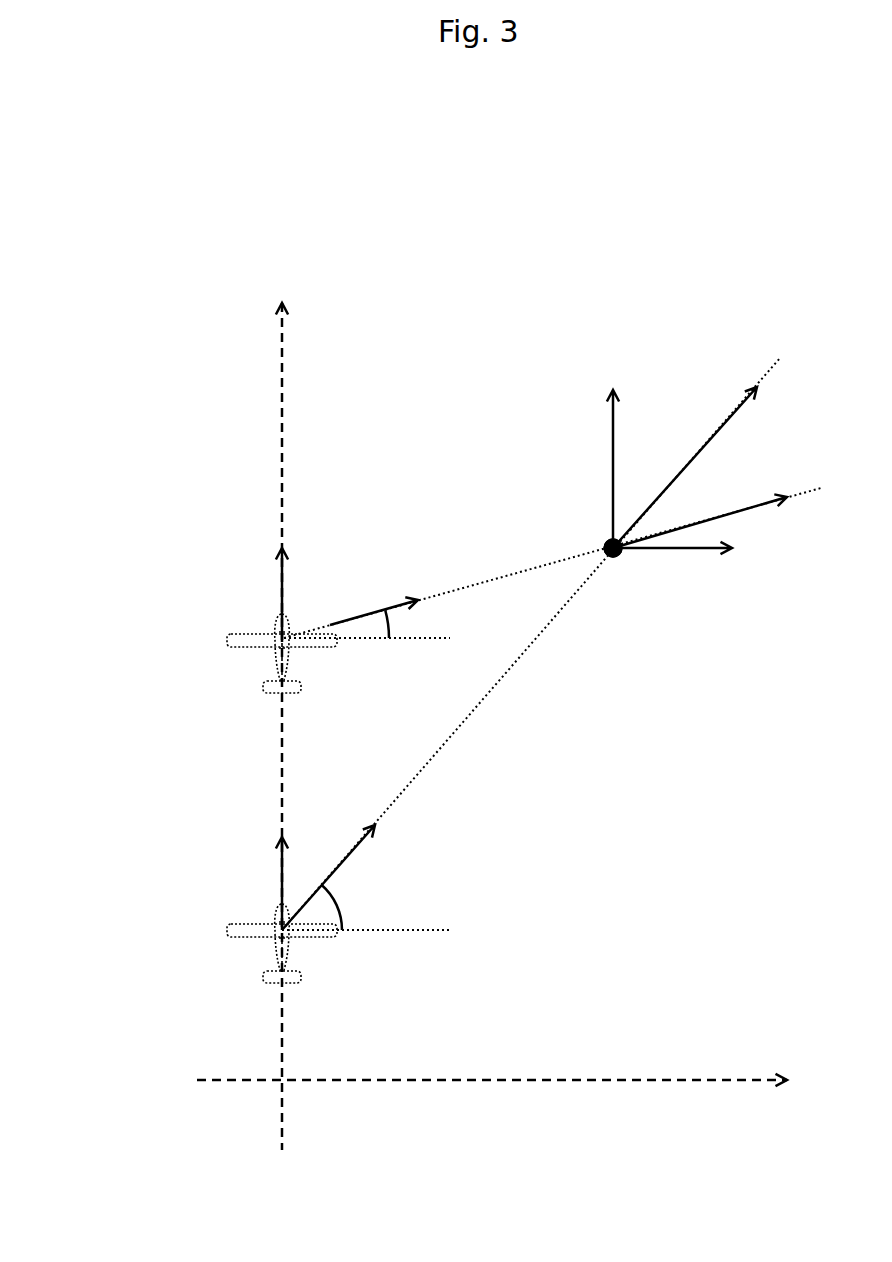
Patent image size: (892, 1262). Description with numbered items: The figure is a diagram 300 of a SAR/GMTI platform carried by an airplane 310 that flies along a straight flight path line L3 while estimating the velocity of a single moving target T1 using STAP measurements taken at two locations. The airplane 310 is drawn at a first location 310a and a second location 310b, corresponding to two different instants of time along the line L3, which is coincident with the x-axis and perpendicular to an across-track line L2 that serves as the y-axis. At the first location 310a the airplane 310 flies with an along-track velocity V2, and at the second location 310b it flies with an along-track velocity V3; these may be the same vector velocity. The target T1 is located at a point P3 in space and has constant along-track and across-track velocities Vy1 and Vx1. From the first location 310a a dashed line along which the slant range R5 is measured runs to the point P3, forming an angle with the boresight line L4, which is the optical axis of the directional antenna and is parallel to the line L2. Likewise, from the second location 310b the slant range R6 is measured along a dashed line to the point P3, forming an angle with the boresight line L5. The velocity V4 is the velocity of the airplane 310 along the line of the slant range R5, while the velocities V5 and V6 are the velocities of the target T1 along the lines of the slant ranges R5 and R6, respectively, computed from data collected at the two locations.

The diagram 300 is at (178, 220).
The airplane 310 is at (289, 802).
The first location of airplane 310a is at (285, 932).
The second location of airplane 310b is at (285, 640).
The across-track line L2 is at (732, 1075).
The flight path line L3 is at (278, 395).
The boresight line at first location L4 is at (425, 933).
The boresight line at second location L5 is at (413, 645).
The slant range at first location R5 is at (430, 763).
The slant range at second location R6 is at (520, 570).
The along-track velocity at first location V2 is at (277, 878).
The along-track velocity at second location V3 is at (277, 588).
The platform velocity along slant range line V4 is at (348, 848).
The target velocity along first slant range line V5 is at (732, 402).
The target velocity along second slant range line V6 is at (730, 508).
The target across-track velocity Vx1 is at (672, 552).
The target along-track velocity Vy1 is at (608, 428).
The target point P3 is at (600, 540).
The target T1 is at (615, 557).